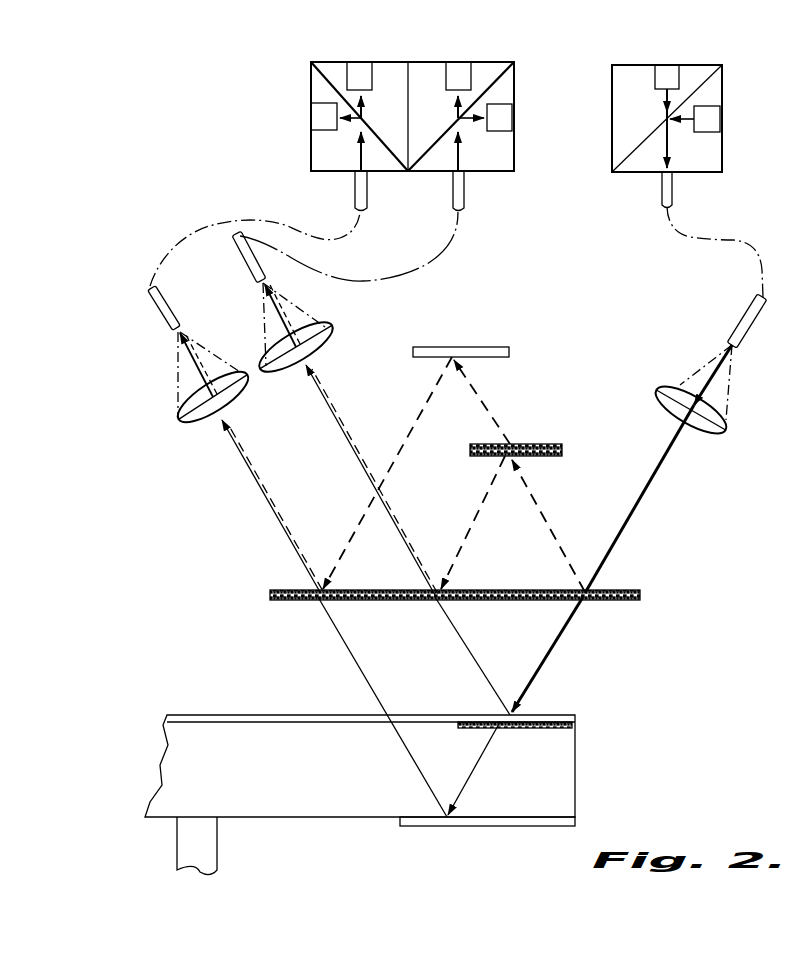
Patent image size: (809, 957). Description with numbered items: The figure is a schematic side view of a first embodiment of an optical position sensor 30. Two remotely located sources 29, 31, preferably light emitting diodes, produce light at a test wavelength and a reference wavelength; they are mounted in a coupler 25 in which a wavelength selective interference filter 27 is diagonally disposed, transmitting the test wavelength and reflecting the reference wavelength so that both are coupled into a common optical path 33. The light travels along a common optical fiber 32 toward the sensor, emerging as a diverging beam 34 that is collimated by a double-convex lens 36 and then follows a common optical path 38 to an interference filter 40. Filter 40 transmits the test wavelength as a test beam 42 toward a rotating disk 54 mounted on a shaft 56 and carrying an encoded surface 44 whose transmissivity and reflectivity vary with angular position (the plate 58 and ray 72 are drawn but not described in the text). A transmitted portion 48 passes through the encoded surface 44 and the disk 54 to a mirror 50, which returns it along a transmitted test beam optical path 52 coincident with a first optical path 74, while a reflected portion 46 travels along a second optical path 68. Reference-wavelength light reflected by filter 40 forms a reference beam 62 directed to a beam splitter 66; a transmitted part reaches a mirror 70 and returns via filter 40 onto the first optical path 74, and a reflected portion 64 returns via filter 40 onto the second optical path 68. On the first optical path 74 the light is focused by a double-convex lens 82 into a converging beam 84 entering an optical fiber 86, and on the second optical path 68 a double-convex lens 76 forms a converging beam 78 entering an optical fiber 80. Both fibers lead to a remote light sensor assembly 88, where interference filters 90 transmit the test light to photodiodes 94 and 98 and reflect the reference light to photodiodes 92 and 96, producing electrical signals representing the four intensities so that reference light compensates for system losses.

The coupler 25 is at (618, 196).
The interference filter 27 is at (708, 70).
The light source 29 is at (667, 68).
The light source 31 is at (712, 117).
The optical fiber 32 is at (741, 313).
The common optical path 33 is at (676, 148).
The diverging beam 34 is at (688, 372).
The double-convex lens 36 is at (728, 428).
The common optical path 38 is at (658, 487).
The interference filter 40 is at (642, 595).
The test beam 42 is at (553, 658).
The encoded surface 44 is at (572, 725).
The reflected portion 46 is at (468, 661).
The transmitted portion 48 is at (476, 780).
The mirror 50 is at (458, 828).
The transmitted test beam optical path 52 is at (352, 665).
The rotating disk 54 is at (317, 800).
The shaft 56 is at (217, 858).
The sample plate 58 is at (215, 713).
The position sensor 30 is at (108, 826).
The reference beam 62 is at (545, 498).
The reflected portion 64 is at (478, 524).
The beam splitter 66 is at (532, 444).
The second optical path 68 is at (343, 416).
The mirror 70 is at (495, 346).
The beam from mirror 72 is at (350, 533).
The first optical path 74 is at (262, 504).
The double-convex lens 76 is at (328, 328).
The converging beam 78 is at (264, 318).
The optical fiber 80 is at (243, 260).
The double-convex lens 82 is at (178, 418).
The converging beam 84 is at (168, 369).
The optical fiber 86 is at (155, 310).
The light sensor assembly 88 is at (433, 52).
The interference filter 90 is at (325, 80).
The photodiode 92 is at (311, 118).
The photodiode 94 is at (358, 61).
The photodiode 96 is at (512, 118).
The photodiode 98 is at (462, 62).